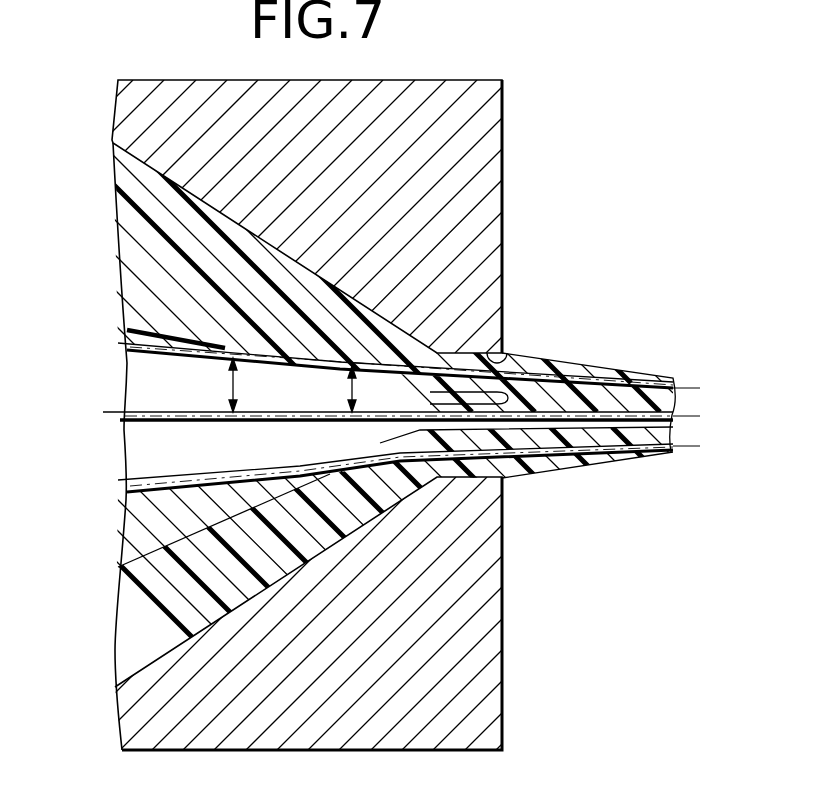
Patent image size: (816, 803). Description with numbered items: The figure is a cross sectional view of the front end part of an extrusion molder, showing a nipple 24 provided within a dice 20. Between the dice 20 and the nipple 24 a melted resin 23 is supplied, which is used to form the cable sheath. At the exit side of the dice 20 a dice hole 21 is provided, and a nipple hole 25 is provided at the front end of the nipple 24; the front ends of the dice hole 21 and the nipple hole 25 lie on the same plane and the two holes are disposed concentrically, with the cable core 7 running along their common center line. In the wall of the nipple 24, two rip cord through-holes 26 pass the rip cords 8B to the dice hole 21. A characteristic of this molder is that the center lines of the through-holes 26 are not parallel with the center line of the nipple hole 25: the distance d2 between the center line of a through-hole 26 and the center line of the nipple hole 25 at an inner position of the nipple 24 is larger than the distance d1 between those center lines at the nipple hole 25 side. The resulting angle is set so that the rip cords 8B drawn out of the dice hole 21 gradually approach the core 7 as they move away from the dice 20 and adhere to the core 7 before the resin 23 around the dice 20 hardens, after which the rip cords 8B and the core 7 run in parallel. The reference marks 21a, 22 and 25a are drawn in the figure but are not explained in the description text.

The dice 20 is at (503, 173).
The resin 23 is at (128, 204).
The nipple 24 is at (133, 296).
The rip cord 8B is at (133, 355).
The cable core 7 is at (133, 414).
The rip cord through-hole 26 is at (240, 472).
The dice hole 21 is at (508, 395).
The notch of upper tapered portion 21a is at (500, 350).
The nipple hole 25 is at (540, 400).
The lower tapered portion 22 is at (515, 480).
The lower cladding layer 25a is at (575, 455).
The distance at the hole side d1 is at (337, 389).
The distance at the inner position d2 is at (218, 385).